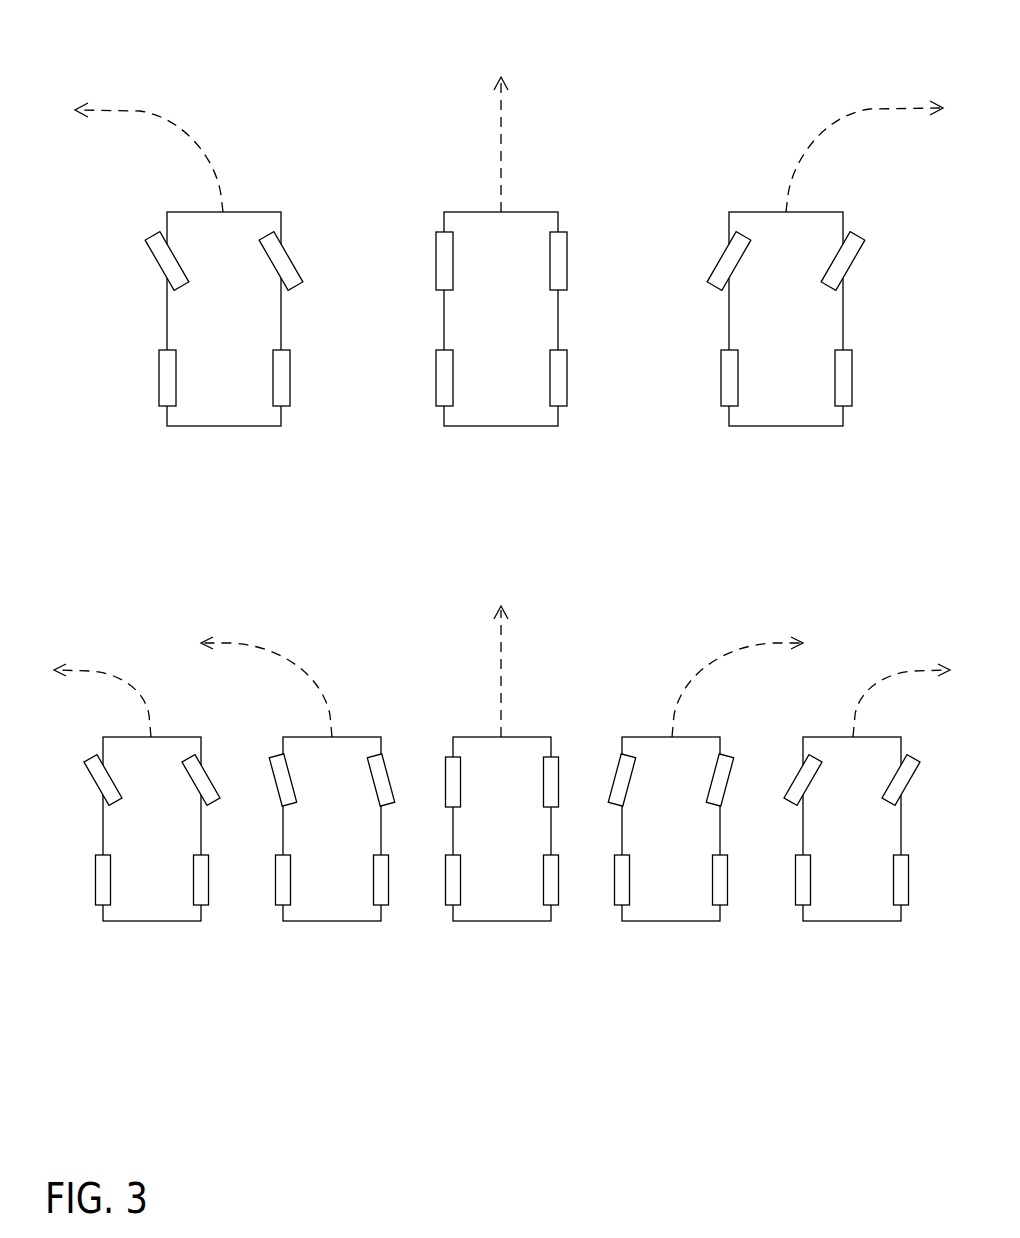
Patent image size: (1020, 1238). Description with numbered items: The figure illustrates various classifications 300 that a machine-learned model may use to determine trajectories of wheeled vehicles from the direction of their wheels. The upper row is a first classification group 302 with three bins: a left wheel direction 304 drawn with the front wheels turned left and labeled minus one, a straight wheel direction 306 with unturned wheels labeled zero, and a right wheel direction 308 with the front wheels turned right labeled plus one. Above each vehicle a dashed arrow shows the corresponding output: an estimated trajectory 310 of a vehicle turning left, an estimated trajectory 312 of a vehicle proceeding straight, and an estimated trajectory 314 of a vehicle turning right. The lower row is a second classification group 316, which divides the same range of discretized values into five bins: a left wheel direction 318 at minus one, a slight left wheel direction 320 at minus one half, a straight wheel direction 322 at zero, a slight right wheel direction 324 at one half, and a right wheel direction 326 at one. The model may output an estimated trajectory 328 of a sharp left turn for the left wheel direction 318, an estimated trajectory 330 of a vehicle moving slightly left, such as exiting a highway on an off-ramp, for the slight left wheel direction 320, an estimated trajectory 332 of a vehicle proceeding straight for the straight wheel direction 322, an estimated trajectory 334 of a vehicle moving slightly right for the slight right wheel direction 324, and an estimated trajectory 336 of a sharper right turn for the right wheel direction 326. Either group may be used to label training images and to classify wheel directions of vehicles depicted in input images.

The classifications 300 is at (191, 43).
The first classification group 302 is at (863, 455).
The left wheel direction 304 is at (192, 330).
The straight wheel direction 306 is at (470, 328).
The right wheel direction 308 is at (750, 328).
The estimated trajectory 310 is at (213, 168).
The estimated trajectory 312 is at (505, 168).
The estimated trajectory 314 is at (798, 170).
The second classification group 316 is at (915, 965).
The left wheel direction 318 is at (130, 828).
The slight left wheel direction 320 is at (331, 907).
The straight wheel direction 322 is at (503, 907).
The slight right wheel direction 324 is at (673, 907).
The right wheel direction 326 is at (870, 831).
The estimated trajectory 328 is at (147, 707).
The estimated trajectory 330 is at (333, 707).
The estimated trajectory 332 is at (504, 704).
The estimated trajectory 334 is at (678, 708).
The estimated trajectory 336 is at (858, 707).